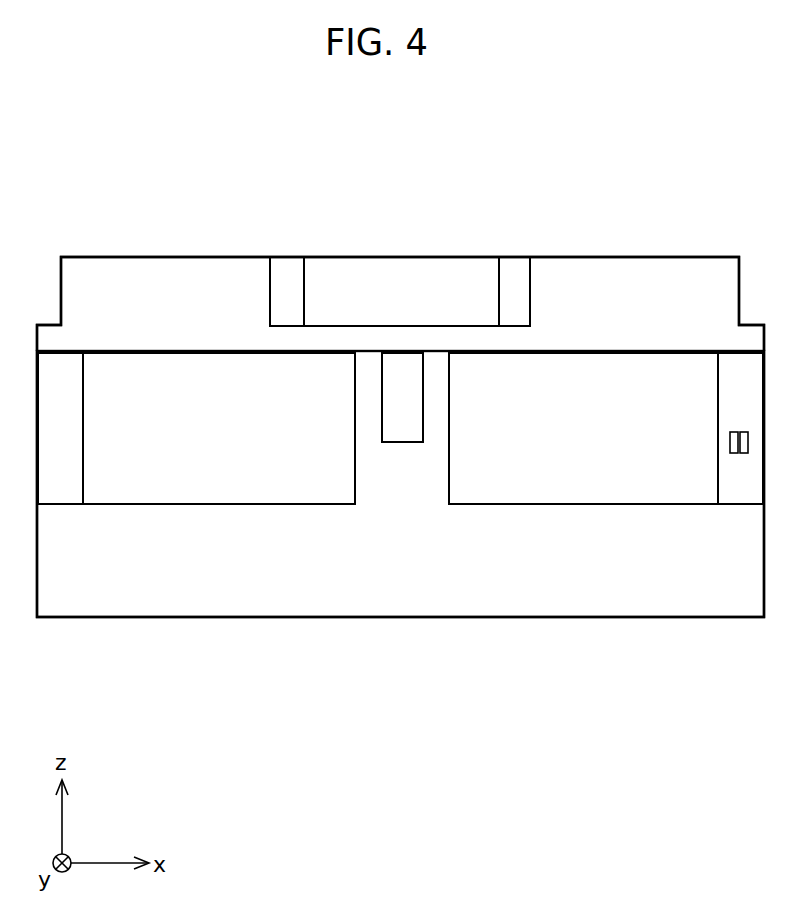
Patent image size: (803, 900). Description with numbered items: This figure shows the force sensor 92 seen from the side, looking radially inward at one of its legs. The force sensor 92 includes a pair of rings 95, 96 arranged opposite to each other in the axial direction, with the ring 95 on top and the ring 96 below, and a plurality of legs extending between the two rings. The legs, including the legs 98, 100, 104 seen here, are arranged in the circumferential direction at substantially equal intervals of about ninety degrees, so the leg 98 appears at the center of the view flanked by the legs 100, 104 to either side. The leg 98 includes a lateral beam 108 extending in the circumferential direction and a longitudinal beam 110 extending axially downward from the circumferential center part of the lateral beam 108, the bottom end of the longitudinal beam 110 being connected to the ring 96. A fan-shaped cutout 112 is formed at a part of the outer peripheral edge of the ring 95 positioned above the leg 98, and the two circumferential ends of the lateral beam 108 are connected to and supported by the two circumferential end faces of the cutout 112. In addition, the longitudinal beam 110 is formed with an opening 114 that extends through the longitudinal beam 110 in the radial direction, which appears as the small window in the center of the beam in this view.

The force sensor 92 is at (728, 128).
The ring 95 is at (643, 257).
The ring 96 is at (493, 617).
The leg 98 is at (566, 355).
The leg 100 is at (95, 433).
The leg 104 is at (703, 452).
The lateral beam 108 is at (468, 338).
The longitudinal beam 110 is at (450, 383).
The fan-shaped cutout 112 is at (290, 295).
The opening 114 is at (383, 365).